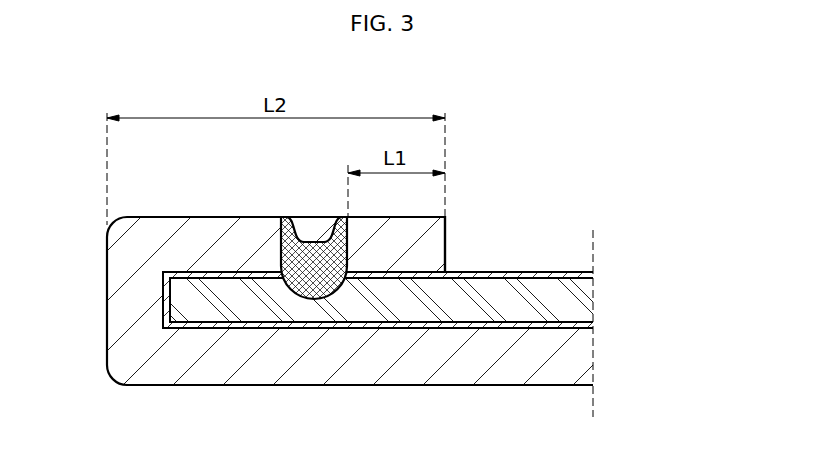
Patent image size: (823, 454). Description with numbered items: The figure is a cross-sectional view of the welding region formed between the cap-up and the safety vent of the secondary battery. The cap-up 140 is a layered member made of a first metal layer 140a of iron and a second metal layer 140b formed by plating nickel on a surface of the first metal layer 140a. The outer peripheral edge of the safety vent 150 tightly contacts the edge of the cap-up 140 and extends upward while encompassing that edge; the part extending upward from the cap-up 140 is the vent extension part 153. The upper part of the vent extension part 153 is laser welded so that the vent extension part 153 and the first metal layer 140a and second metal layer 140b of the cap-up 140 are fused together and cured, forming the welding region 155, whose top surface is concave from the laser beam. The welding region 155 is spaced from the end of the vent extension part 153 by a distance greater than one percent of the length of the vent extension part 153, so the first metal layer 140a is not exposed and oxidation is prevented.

The safety vent 150 is at (123, 302).
The vent extension part 153 is at (208, 228).
The welding region 155 is at (315, 238).
The cap-up 140 is at (434, 291).
The first metal layer 140a is at (587, 302).
The second metal layer 140b is at (585, 275).